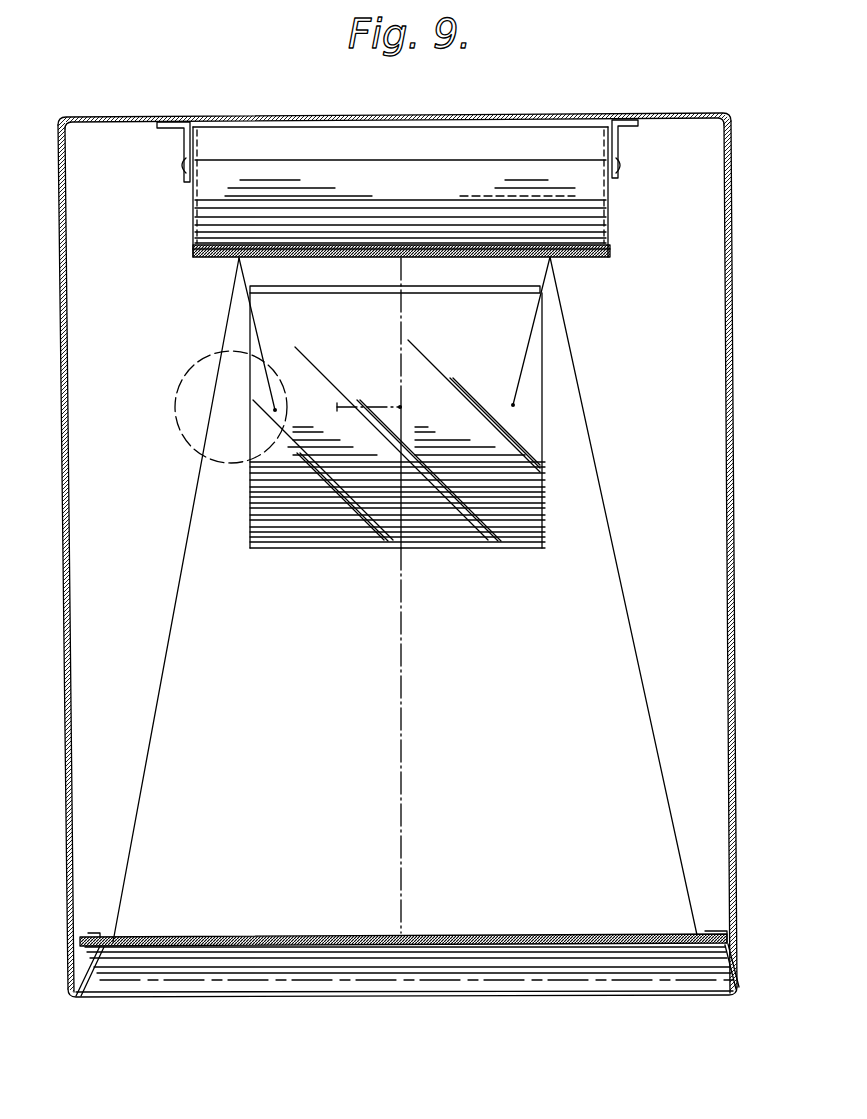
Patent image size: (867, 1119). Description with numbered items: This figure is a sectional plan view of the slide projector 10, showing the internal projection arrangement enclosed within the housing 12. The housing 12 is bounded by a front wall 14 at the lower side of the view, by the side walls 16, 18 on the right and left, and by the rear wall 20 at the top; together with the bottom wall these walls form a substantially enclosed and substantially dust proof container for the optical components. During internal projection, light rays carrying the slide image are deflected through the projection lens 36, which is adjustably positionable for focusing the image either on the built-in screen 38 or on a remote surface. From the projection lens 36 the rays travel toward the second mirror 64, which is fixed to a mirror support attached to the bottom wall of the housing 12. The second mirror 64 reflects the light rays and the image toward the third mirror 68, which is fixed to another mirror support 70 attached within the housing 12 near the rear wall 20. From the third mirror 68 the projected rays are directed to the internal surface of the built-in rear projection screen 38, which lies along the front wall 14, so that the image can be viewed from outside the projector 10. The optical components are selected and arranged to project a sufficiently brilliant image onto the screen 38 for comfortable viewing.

The slide projector 10 is at (273, 1005).
The housing 12 is at (734, 276).
The front wall 14 is at (100, 975).
The side wall 16 is at (730, 557).
The side wall 18 is at (69, 530).
The rear wall 20 is at (95, 123).
The projection lens 36 is at (209, 354).
The built-in screen 38 is at (368, 935).
The second mirror 64 is at (543, 437).
The third mirror 68 is at (577, 257).
The mirror support 70 is at (618, 135).